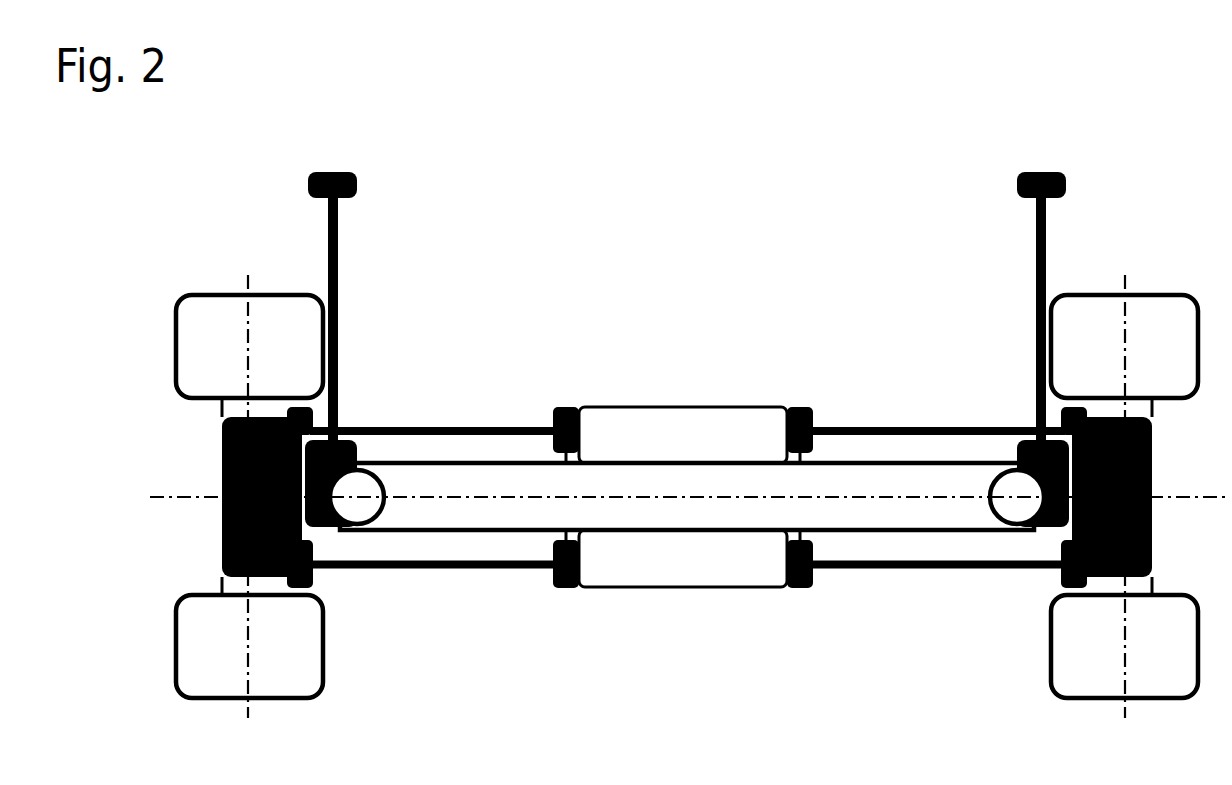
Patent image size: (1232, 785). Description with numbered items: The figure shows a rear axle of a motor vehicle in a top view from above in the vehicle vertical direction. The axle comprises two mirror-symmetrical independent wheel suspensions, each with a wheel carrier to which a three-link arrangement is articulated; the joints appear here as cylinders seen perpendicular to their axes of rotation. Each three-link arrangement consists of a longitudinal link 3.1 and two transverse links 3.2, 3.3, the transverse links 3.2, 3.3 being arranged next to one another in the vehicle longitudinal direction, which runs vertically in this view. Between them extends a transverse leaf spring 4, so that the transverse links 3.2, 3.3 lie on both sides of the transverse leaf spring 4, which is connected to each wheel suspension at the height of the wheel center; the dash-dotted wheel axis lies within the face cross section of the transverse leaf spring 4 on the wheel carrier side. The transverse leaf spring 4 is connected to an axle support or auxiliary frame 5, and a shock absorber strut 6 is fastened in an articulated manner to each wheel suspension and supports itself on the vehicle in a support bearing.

The longitudinal link 3.1 is at (322, 238).
The transverse link 3.2 is at (496, 413).
The transverse link 3.3 is at (490, 575).
The transverse leaf spring 4 is at (692, 544).
The axle support or auxiliary frame 5 is at (694, 402).
The shock absorber strut 6 is at (365, 452).